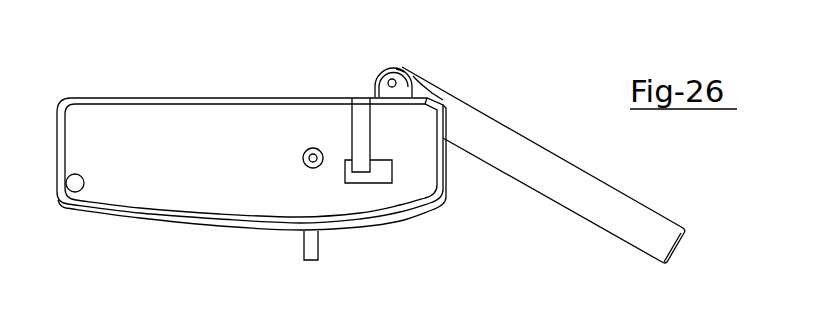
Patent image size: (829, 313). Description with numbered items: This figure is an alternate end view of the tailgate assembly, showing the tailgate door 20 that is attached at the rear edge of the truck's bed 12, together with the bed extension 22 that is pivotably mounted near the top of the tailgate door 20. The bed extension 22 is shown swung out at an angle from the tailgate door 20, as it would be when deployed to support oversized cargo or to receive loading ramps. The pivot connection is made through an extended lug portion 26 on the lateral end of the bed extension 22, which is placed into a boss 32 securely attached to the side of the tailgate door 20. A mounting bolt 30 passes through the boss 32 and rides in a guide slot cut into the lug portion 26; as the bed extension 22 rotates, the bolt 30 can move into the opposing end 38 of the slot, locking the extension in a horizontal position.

The bed 12 is at (124, 97).
The tailgate door 20 is at (140, 226).
The bed extension 22 is at (565, 158).
The extended lug portion 26 is at (400, 67).
The mounting bolt 30 is at (392, 79).
The boss 32 is at (375, 86).
The opposing end 38 is at (437, 90).